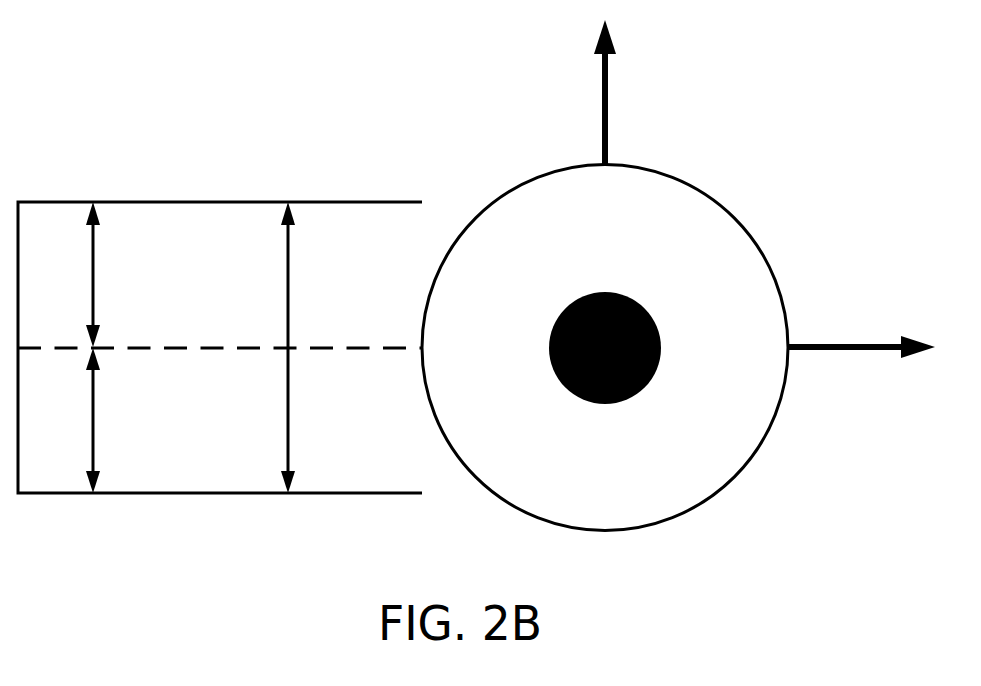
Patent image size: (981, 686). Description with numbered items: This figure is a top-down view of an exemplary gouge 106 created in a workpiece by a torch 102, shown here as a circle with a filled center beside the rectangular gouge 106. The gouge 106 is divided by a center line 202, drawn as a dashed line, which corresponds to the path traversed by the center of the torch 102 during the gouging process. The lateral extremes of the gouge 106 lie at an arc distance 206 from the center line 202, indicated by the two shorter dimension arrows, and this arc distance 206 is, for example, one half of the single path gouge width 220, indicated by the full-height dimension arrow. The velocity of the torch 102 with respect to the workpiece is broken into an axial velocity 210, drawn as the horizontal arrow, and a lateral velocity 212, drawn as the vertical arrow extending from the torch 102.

The torch 102 is at (776, 270).
The gouge 106 is at (348, 201).
The center line 202 is at (250, 345).
The arc distance 206 is at (96, 289).
The gouge width 220 is at (290, 330).
The lateral velocity 212 is at (608, 90).
The axial velocity 210 is at (830, 349).